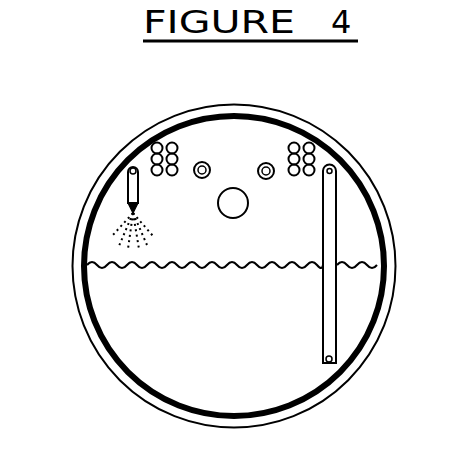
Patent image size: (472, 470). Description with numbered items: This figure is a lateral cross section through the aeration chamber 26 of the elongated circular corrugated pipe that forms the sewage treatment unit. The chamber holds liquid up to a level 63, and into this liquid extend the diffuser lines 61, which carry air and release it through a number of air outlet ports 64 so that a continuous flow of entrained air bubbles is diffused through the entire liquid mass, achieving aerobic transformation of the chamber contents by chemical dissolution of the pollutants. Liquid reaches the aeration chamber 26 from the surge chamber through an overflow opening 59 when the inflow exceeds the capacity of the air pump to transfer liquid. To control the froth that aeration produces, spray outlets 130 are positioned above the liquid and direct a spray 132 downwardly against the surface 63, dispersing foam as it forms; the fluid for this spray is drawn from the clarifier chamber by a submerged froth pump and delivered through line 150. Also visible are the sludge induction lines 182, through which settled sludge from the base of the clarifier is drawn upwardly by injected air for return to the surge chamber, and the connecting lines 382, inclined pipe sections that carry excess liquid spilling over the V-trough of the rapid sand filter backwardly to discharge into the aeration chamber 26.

The aeration chamber 26 is at (355, 216).
The overflow opening 59 is at (231, 219).
The diffuser lines 61 is at (330, 246).
The liquid level 63 is at (172, 266).
The air outlet ports 64 is at (334, 361).
The spray outlets 130 is at (128, 191).
The spray 132 is at (118, 231).
The line 150 is at (128, 163).
The induction line 182 is at (167, 140).
The connecting lines 382 is at (264, 163).